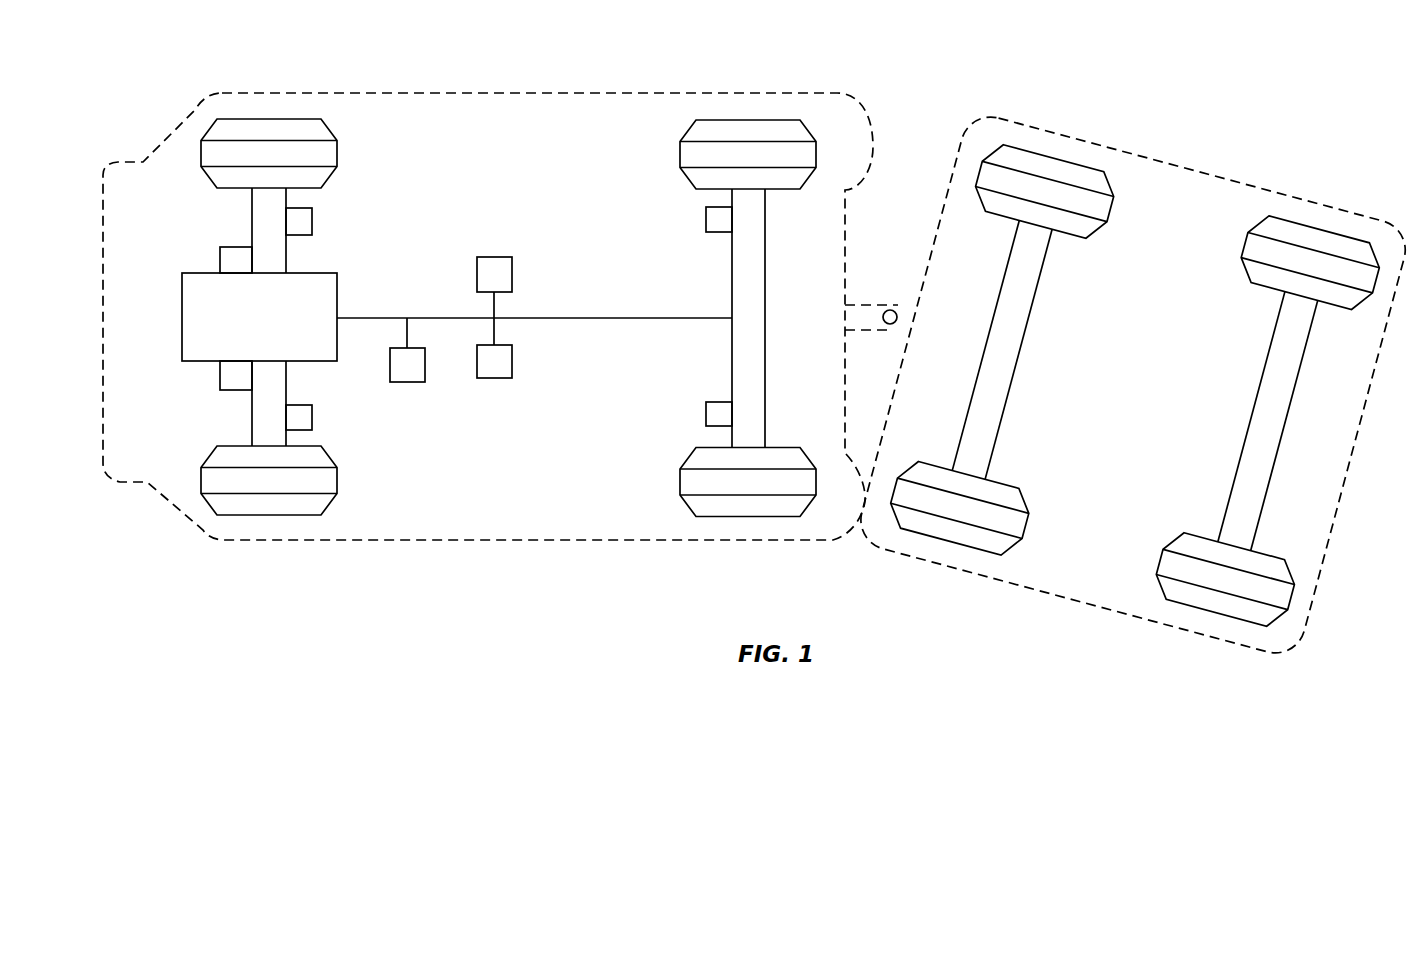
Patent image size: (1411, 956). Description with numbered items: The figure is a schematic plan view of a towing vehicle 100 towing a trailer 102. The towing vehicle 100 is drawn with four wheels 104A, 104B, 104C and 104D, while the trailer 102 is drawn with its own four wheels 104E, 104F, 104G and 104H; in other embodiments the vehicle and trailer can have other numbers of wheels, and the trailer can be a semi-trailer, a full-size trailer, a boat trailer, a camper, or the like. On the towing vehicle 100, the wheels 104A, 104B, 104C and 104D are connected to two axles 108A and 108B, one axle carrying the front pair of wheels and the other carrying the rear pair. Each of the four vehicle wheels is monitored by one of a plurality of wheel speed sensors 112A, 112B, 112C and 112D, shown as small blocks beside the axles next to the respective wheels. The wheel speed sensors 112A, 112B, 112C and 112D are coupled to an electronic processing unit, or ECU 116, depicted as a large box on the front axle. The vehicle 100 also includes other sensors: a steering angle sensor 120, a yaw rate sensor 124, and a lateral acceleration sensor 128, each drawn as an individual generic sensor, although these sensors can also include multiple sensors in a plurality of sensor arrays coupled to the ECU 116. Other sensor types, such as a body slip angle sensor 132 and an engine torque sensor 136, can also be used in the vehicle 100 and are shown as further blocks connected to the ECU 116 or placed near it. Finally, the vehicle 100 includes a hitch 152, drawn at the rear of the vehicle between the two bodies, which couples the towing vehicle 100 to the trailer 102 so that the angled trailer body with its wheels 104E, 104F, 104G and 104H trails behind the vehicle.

The towing vehicle 100 is at (523, 92).
The trailer 102 is at (1195, 167).
The wheel 104A is at (267, 119).
The wheel 104B is at (757, 120).
The wheel 104C is at (263, 515).
The wheel 104D is at (755, 518).
The wheel 104E is at (1085, 237).
The wheel 104F is at (1250, 285).
The wheel 104G is at (1185, 536).
The wheel 104H is at (1018, 488).
The axle 108A is at (252, 407).
The axle 108B is at (732, 360).
The wheel speed sensor 112A is at (298, 220).
The wheel speed sensor 112B is at (705, 217).
The wheel speed sensor 112C is at (300, 418).
The wheel speed sensor 112D is at (707, 417).
The electronic processing unit 116 is at (338, 357).
The steering angle sensor 120 is at (218, 260).
The yaw rate sensor 124 is at (495, 258).
The lateral acceleration sensor 128 is at (493, 380).
The body slip angle sensor 132 is at (418, 383).
The engine torque sensor 136 is at (218, 378).
The hitch 152 is at (881, 318).